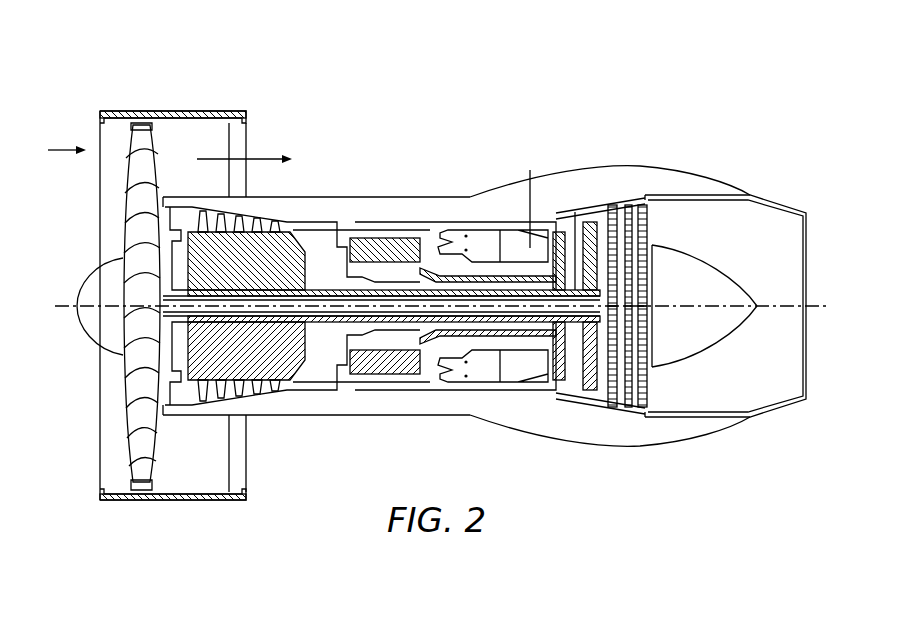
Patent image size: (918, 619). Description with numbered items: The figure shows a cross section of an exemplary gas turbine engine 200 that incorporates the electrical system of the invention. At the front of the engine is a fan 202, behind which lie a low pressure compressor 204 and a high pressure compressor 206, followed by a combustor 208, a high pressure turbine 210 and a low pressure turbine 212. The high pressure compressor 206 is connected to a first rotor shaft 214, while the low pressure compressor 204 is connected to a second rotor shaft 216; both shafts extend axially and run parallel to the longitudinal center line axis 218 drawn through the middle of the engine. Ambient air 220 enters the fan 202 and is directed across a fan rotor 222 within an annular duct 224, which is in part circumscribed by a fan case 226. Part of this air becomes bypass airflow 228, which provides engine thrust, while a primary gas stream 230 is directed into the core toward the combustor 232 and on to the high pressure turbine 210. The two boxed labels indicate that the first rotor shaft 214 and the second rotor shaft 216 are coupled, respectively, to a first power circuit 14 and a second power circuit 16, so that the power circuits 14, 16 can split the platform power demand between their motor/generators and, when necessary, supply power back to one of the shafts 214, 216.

The gas turbine engine 200 is at (585, 44).
The fan 202 is at (112, 202).
The low pressure compressor 204 is at (268, 253).
The high pressure compressor 206 is at (393, 374).
The combustor 208 is at (477, 376).
The high pressure turbine 210 is at (553, 212).
The low pressure turbine 212 is at (640, 207).
The first rotor shaft 214 is at (497, 333).
The second rotor shaft 216 is at (577, 384).
The longitudinal center line axis 218 is at (822, 302).
The ambient air 220 is at (66, 146).
The fan rotor 222 is at (148, 491).
The annular duct 224 is at (233, 462).
The fan case 226 is at (188, 500).
The bypass airflow 228 is at (285, 152).
The primary gas stream 230 is at (350, 232).
The combustor 232 is at (477, 237).
The first power circuit 14 is at (530, 170).
The second power circuit 16 is at (575, 212).